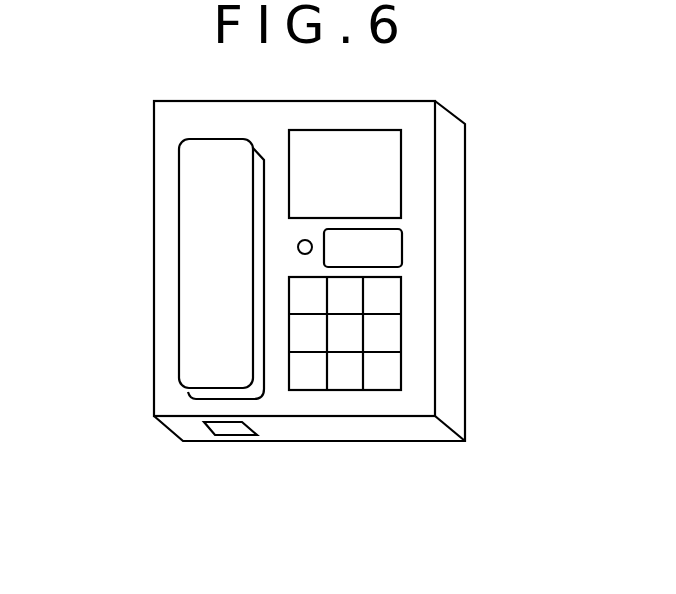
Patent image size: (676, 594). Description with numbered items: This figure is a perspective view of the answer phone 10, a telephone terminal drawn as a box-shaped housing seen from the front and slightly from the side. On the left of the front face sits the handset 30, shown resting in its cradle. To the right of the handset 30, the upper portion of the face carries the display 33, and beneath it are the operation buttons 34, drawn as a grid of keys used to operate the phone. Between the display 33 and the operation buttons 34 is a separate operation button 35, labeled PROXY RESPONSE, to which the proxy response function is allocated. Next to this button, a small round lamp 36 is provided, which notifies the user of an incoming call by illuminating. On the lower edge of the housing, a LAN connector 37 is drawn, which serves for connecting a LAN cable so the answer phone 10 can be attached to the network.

The answer phone 10 is at (172, 122).
The handset 30 is at (200, 341).
The display 33 is at (378, 175).
The operation buttons 34 is at (390, 371).
The operation button 35 is at (402, 248).
The lamp 36 is at (298, 247).
The LAN connector 37 is at (234, 430).